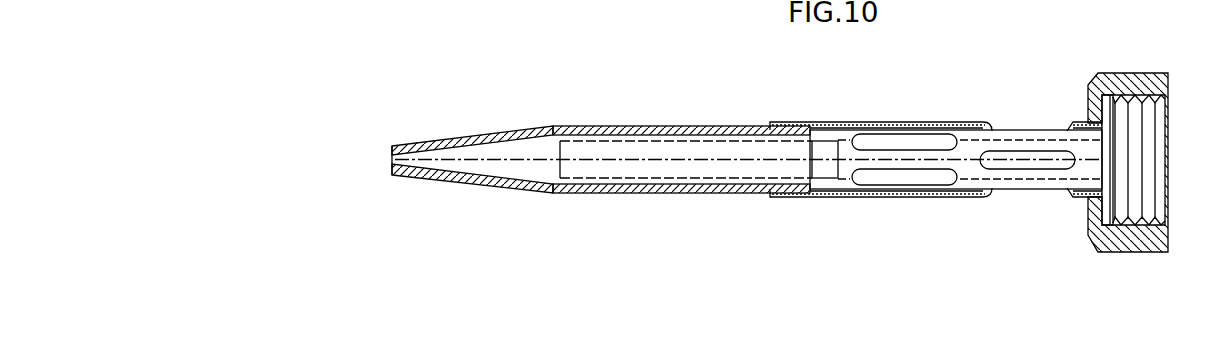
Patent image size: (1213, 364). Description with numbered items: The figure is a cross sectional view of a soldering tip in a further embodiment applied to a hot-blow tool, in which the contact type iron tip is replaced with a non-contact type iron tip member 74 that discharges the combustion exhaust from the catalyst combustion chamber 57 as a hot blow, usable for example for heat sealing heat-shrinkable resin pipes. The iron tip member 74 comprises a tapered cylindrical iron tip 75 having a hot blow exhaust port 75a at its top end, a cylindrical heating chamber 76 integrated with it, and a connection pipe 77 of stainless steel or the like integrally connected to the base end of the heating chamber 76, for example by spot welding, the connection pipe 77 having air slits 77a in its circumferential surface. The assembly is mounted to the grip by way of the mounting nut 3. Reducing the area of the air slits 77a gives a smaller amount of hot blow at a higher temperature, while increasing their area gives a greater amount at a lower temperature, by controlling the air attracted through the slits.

The mounting nut 3 is at (1150, 227).
The catalyst combustion chamber 57 is at (652, 148).
The non-contact type iron tip member 74 is at (791, 101).
The tapered cylindrical iron tip 75 is at (507, 186).
The hot blow exhaust port 75a is at (393, 158).
The cylindrical heating chamber 76 is at (708, 193).
The connection pipe 77 is at (832, 122).
The air slits 77a is at (1010, 158).